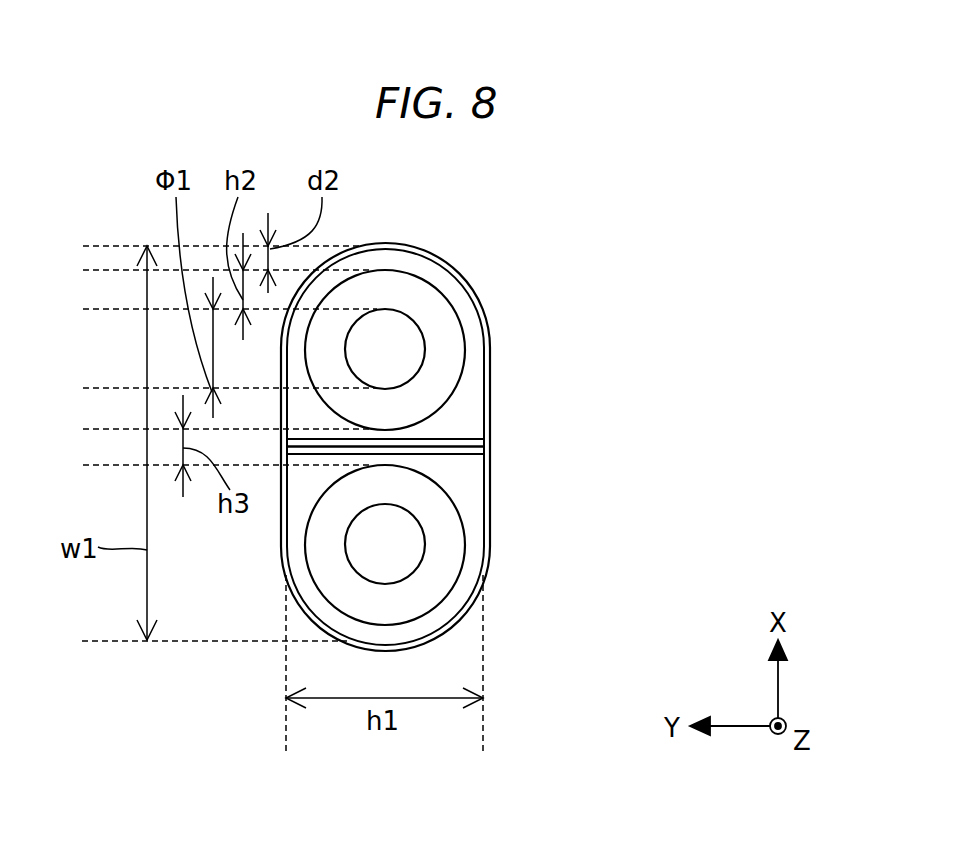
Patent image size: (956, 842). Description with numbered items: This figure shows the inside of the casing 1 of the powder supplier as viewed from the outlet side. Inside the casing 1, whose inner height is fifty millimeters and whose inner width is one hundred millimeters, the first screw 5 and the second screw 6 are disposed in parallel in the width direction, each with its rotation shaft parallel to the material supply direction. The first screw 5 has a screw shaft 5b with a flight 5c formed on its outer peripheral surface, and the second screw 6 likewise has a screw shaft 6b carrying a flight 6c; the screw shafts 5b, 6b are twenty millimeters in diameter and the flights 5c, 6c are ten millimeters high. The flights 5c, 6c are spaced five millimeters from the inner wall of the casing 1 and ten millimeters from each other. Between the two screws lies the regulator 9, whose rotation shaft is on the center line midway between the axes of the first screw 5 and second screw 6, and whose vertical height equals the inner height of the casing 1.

The casing 1 is at (393, 239).
The first screw 5 is at (480, 546).
The screw shaft 5b is at (397, 550).
The flight 5c is at (417, 593).
The second screw 6 is at (479, 350).
The screw shaft 6b is at (387, 350).
The flight 6c is at (443, 325).
The regulator 9 is at (470, 445).